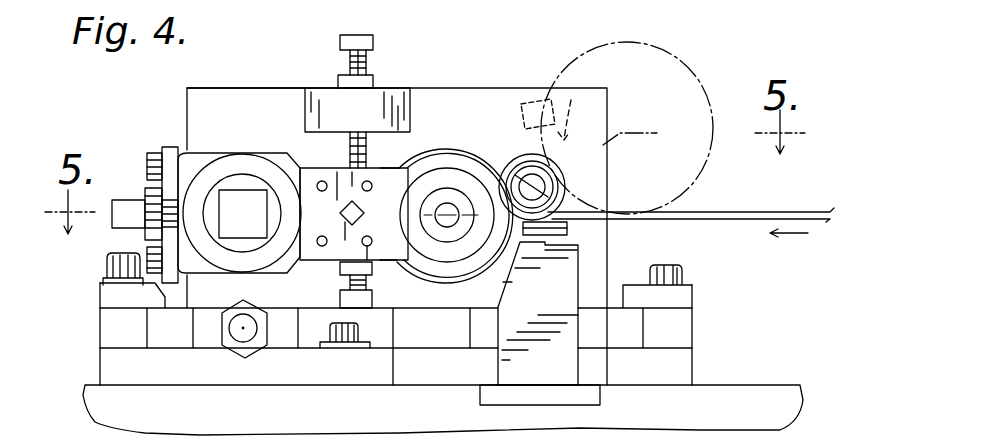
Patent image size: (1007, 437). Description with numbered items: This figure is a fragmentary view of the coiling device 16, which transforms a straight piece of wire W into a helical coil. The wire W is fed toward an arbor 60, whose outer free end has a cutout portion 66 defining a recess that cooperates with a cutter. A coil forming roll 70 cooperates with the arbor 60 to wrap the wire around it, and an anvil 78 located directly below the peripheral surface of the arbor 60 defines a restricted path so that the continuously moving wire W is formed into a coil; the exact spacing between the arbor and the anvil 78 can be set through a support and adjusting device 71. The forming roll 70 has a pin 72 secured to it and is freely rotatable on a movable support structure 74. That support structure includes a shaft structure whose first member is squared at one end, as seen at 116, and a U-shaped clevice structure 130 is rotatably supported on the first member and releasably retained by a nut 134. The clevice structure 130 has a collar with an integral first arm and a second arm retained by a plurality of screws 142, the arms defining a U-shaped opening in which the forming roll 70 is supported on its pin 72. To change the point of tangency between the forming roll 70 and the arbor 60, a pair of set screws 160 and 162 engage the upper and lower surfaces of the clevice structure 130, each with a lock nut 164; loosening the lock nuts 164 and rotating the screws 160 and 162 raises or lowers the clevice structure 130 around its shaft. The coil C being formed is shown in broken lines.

The coiling device 16 is at (262, 50).
The set screw 160 is at (348, 66).
The lock nut 164 is at (340, 82).
The U-shaped clevice structure 130 is at (329, 159).
The movable support structure 74 is at (254, 137).
The screws 142 is at (318, 183).
The support and adjusting device 71 is at (448, 158).
The arbor 60 is at (520, 178).
The wire coil C is at (532, 176).
The coil forming roll 70 is at (432, 160).
The cutout portion 66 is at (548, 190).
The pin 72 is at (452, 222).
The anvil 78 is at (542, 242).
The set screw 162 is at (368, 284).
The nut 134 is at (212, 255).
The squared end 116 is at (255, 226).
The wire W is at (727, 221).